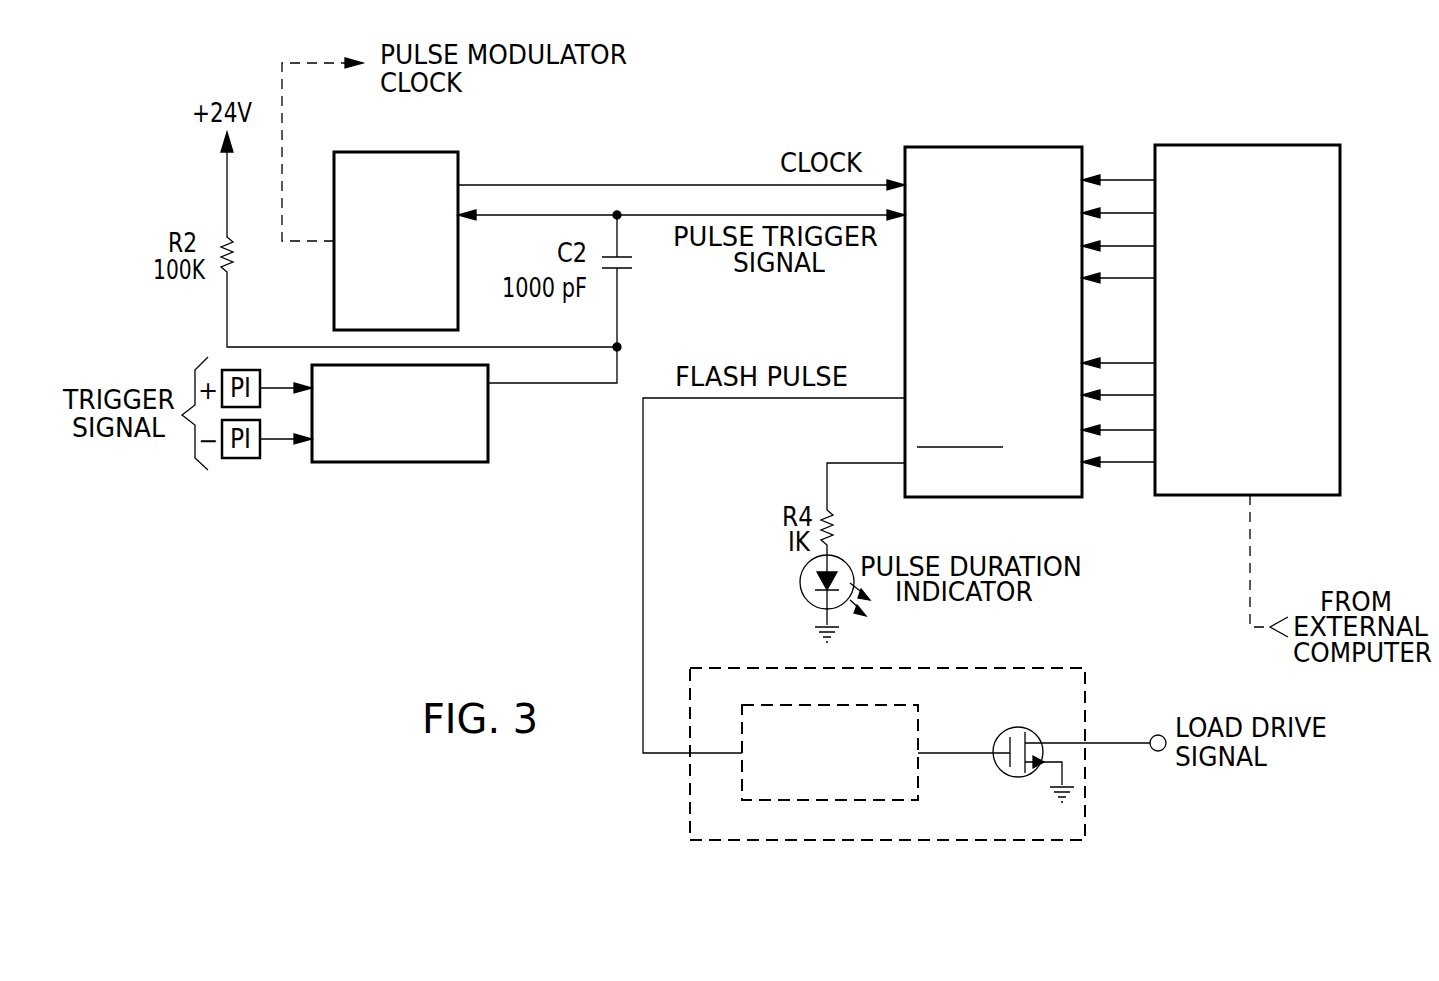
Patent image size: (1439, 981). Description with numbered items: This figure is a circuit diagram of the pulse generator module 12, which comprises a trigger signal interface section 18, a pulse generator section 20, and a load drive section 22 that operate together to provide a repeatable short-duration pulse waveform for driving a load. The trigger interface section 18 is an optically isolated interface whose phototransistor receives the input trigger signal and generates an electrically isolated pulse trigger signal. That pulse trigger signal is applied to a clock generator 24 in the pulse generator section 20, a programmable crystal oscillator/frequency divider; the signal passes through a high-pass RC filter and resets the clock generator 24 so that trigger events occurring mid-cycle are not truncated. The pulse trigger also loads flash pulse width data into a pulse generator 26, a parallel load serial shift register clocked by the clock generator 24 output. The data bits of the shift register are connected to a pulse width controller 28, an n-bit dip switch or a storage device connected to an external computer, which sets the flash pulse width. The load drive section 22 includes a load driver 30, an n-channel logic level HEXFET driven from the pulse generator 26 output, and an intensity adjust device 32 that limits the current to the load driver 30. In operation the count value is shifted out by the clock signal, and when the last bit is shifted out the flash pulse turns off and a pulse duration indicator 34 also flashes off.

The pulse generator module 12 is at (885, 78).
The trigger signal interface section 18 is at (490, 446).
The pulse generator section 20 is at (995, 286).
The load drive section 22 is at (920, 757).
The clock generator 24 is at (375, 152).
The pulse generator 26 is at (942, 147).
The pulse width controller 28 is at (1203, 145).
The load driver 30 is at (1013, 727).
The intensity adjust device 32 is at (748, 800).
The pulse duration indicator 34 is at (801, 588).